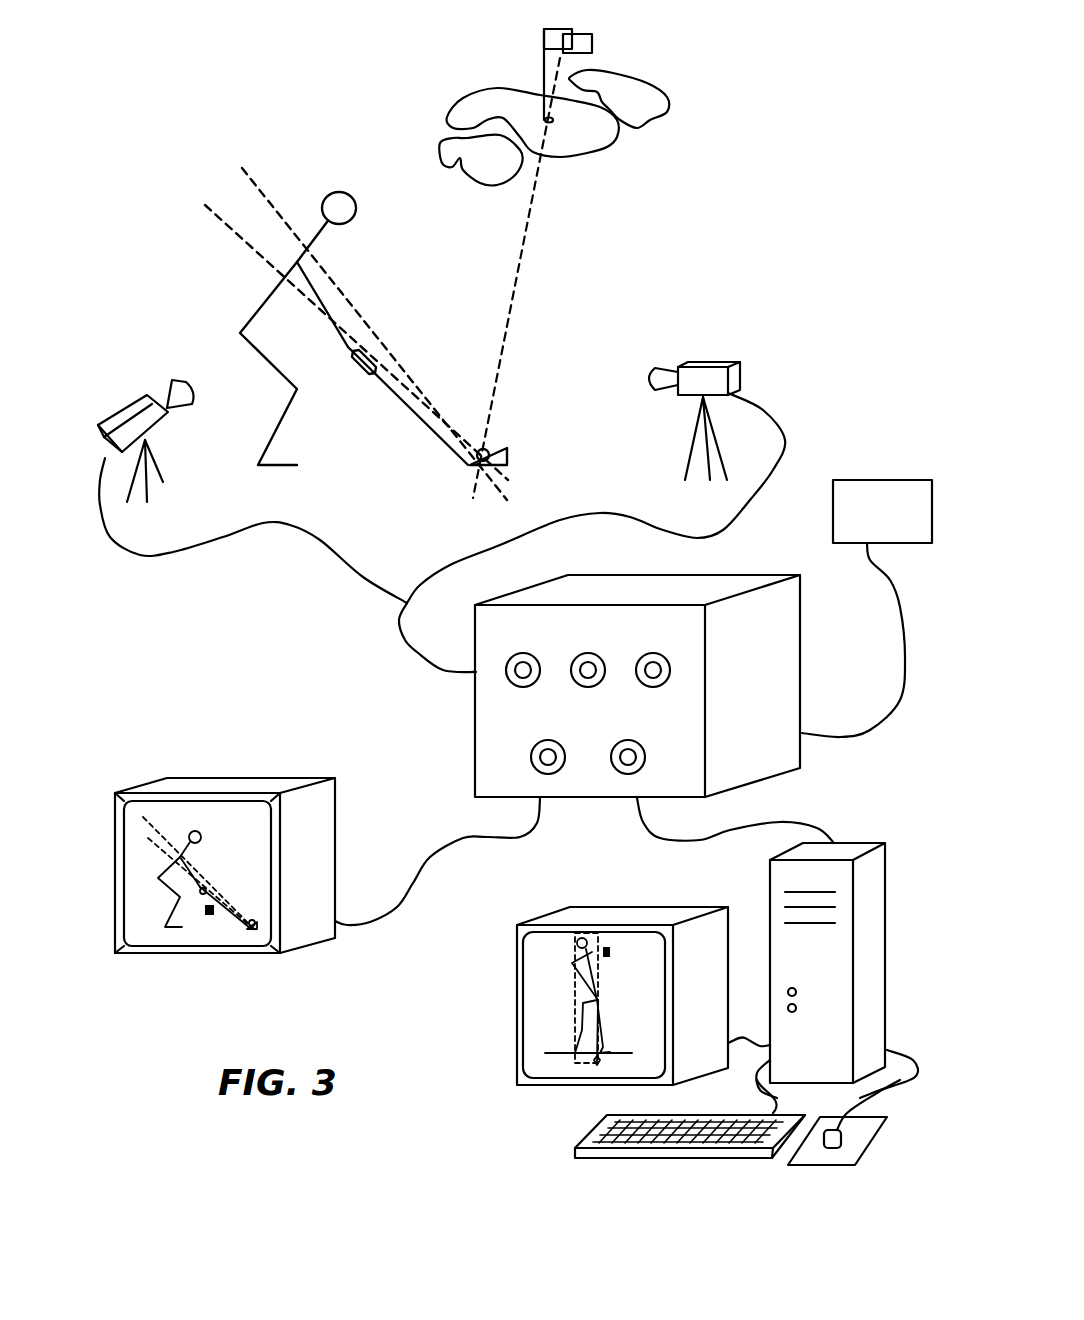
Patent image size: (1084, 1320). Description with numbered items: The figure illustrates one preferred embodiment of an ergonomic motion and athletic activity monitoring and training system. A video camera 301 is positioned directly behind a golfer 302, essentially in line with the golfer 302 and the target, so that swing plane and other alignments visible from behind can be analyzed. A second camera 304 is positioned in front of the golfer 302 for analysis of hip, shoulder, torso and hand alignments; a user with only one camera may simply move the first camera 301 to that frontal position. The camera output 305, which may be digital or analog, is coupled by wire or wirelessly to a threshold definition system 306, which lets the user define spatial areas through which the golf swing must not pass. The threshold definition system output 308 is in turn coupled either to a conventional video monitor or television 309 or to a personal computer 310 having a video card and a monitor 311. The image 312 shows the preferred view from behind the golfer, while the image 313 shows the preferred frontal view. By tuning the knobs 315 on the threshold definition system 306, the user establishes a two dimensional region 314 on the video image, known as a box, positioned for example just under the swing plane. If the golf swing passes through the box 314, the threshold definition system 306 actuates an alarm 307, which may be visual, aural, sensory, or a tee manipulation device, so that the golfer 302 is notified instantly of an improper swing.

The video camera 301 is at (127, 405).
The golfer 302 is at (258, 313).
The second camera 304 is at (727, 363).
The camera output 305 is at (320, 540).
The threshold definition system 306 is at (553, 120).
The alarm 307 is at (895, 478).
The threshold definition system output 308 is at (645, 825).
The video monitor 309 is at (247, 787).
The personal computer 310 is at (770, 892).
The monitor 311 is at (517, 972).
The image 312 is at (190, 937).
The image 313 is at (553, 995).
The two dimensional region 314 is at (209, 917).
The knobs 315 is at (547, 757).